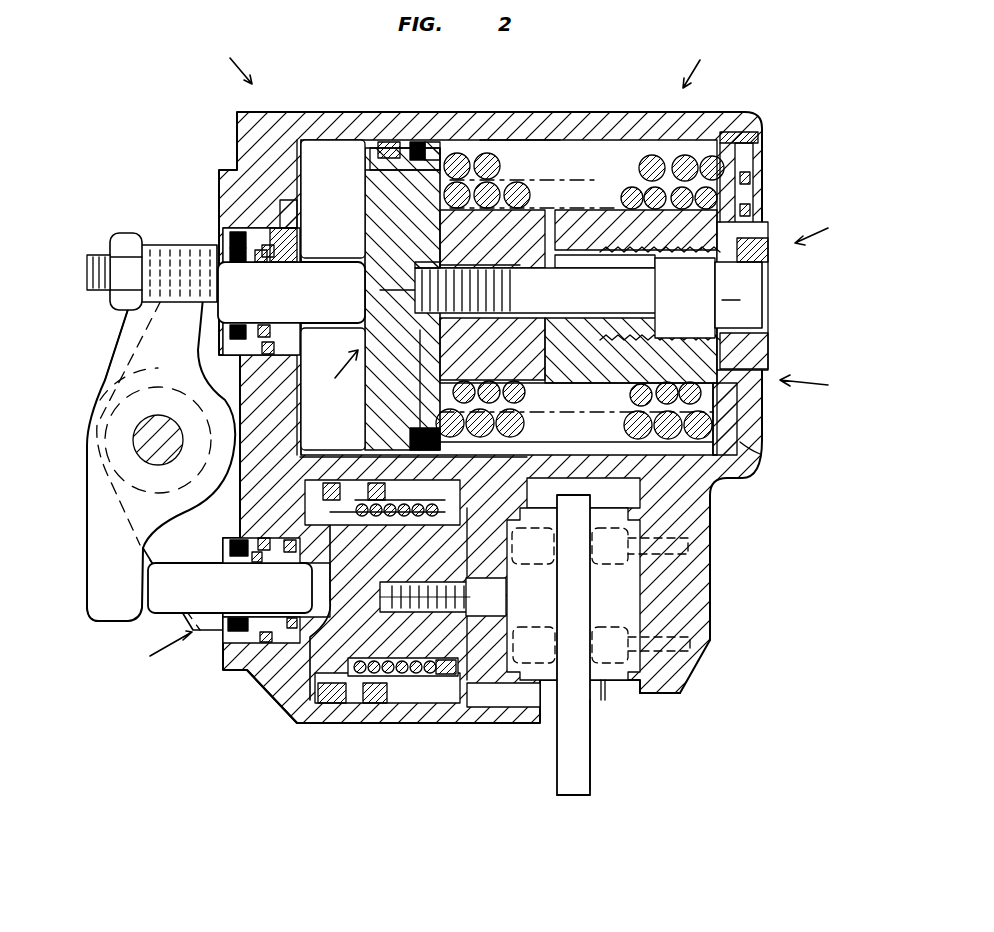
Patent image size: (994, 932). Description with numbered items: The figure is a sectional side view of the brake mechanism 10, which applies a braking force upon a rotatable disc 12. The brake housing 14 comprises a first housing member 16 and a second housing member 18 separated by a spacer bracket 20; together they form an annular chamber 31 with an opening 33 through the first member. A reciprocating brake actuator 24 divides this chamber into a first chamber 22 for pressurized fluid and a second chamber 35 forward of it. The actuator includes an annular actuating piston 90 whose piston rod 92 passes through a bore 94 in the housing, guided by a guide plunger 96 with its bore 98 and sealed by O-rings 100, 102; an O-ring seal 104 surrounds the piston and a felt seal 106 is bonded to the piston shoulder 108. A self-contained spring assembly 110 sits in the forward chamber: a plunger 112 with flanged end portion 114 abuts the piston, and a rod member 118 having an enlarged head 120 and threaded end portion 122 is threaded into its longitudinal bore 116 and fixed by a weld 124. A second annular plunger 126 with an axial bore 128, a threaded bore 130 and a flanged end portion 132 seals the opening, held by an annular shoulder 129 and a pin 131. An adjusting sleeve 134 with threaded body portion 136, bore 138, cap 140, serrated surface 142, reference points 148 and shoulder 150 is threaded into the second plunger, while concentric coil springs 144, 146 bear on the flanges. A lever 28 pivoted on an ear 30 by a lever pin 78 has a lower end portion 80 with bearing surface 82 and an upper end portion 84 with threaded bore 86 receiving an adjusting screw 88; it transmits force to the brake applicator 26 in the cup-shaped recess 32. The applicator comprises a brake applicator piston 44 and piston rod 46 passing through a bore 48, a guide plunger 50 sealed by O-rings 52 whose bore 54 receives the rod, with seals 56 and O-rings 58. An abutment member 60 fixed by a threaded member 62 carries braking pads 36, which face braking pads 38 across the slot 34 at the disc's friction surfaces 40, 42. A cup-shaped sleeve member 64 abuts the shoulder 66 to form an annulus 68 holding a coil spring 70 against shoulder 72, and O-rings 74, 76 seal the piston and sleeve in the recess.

The brake mechanism 10 is at (229, 58).
The rotatable disc 12 is at (590, 788).
The brake housing 14 is at (699, 60).
The first housing member 16 is at (713, 515).
The second housing member 18 is at (240, 114).
The spacer bracket 20 is at (578, 112).
The first chamber 22 is at (332, 140).
The brake actuator 24 is at (333, 370).
The brake applicator 26 is at (160, 655).
The lever 28 is at (88, 505).
The ear 30 is at (205, 240).
The annular chamber 31 is at (397, 142).
The cup-shaped recess 32 is at (480, 710).
The opening 33 is at (752, 446).
The slot 34 is at (630, 692).
The second chamber 35 is at (526, 140).
The braking pads 36 is at (542, 690).
The braking pads 38 is at (608, 692).
The friction surface 40 is at (556, 788).
The disc friction surface 42 is at (592, 748).
The brake applicator piston 44 is at (318, 655).
The piston rod 46 is at (160, 605).
The bore 48 is at (230, 550).
The guide plunger 50 is at (238, 633).
The O-rings 52 is at (262, 540).
The bore 54 is at (256, 565).
The seals 56 is at (250, 643).
The O-rings 58 is at (290, 556).
The abutment member 60 is at (478, 668).
The threaded member 62 is at (390, 598).
The sleeve member 64 is at (395, 690).
The shoulder 66 is at (348, 690).
The annulus 68 is at (442, 677).
The coil spring 70 is at (402, 677).
The shoulder 72 is at (445, 512).
The O-ring 74 is at (332, 483).
The O-ring 76 is at (377, 483).
The lever pin 78 is at (148, 438).
The lower end portion 80 is at (87, 600).
The bearing surface 82 is at (136, 608).
The upper end portion 84 is at (125, 333).
The threaded bore 86 is at (155, 246).
The adjusting screw 88 is at (92, 262).
The actuating piston 90 is at (378, 190).
The piston rod 92 is at (342, 313).
The bore 94 is at (230, 238).
The guide plunger 96 is at (290, 235).
The bore 98 is at (250, 330).
The O-ring 100 is at (252, 260).
The O-ring 102 is at (278, 260).
The O-ring seal 104 is at (380, 150).
The felt seal 106 is at (418, 142).
The piston shoulder 108 is at (432, 142).
The spring assembly 110 is at (819, 386).
The plunger 112 is at (425, 205).
The flanged end portion 114 is at (415, 422).
The longitudinal bore 116 is at (480, 268).
The rod member 118 is at (592, 304).
The enlarged head 120 is at (750, 298).
The threaded end portion 122 is at (440, 318).
The weld 124 is at (437, 256).
The second annular plunger 126 is at (600, 370).
The axial bore 128 is at (545, 282).
The annular shoulder 129 is at (758, 148).
The threaded bore 130 is at (634, 260).
The pin 131 is at (738, 138).
The flanged end portion 132 is at (728, 412).
The adjusting sleeve 134 is at (829, 227).
The threaded body portion 136 is at (668, 252).
The bore 138 is at (655, 278).
The cap 140 is at (762, 347).
The serrated surface 142 is at (752, 212).
The coil spring 144 is at (652, 158).
The coil spring 146 is at (752, 180).
The reference points 148 is at (772, 260).
The shoulder 150 is at (660, 326).